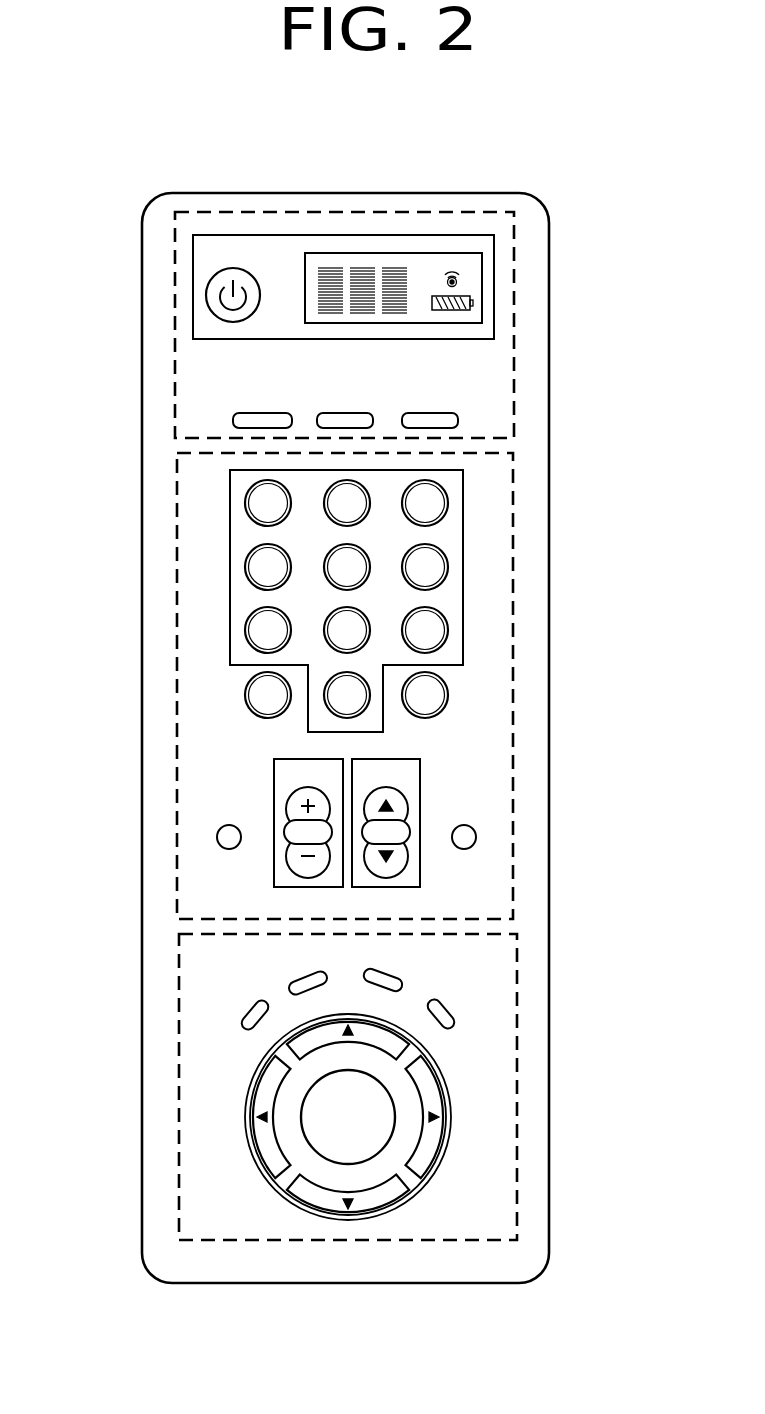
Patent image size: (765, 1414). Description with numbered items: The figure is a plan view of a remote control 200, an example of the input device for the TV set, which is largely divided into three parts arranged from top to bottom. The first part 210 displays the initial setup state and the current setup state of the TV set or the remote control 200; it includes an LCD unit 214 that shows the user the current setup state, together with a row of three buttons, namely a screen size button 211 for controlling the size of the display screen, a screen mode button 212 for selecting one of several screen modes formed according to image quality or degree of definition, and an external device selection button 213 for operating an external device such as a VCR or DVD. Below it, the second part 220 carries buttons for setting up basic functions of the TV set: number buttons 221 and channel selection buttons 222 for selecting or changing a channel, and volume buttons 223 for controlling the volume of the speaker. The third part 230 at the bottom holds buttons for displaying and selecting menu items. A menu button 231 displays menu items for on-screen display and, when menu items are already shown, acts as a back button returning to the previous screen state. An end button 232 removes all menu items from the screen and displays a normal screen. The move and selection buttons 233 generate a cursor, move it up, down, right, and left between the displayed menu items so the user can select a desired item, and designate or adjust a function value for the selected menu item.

The remote control 200 is at (372, 136).
The first part 210 is at (176, 289).
The screen size button 211 is at (232, 420).
The screen mode button 212 is at (366, 414).
The external device selection button 213 is at (458, 420).
The LCD unit 214 is at (483, 285).
The second part 220 is at (178, 664).
The number buttons 221 is at (458, 563).
The channel selection buttons 222 is at (415, 872).
The volume buttons 223 is at (277, 870).
The third part 230 is at (179, 1084).
The menu button 231 is at (240, 1030).
The end button 232 is at (455, 1028).
The move and selection buttons 233 is at (450, 1112).